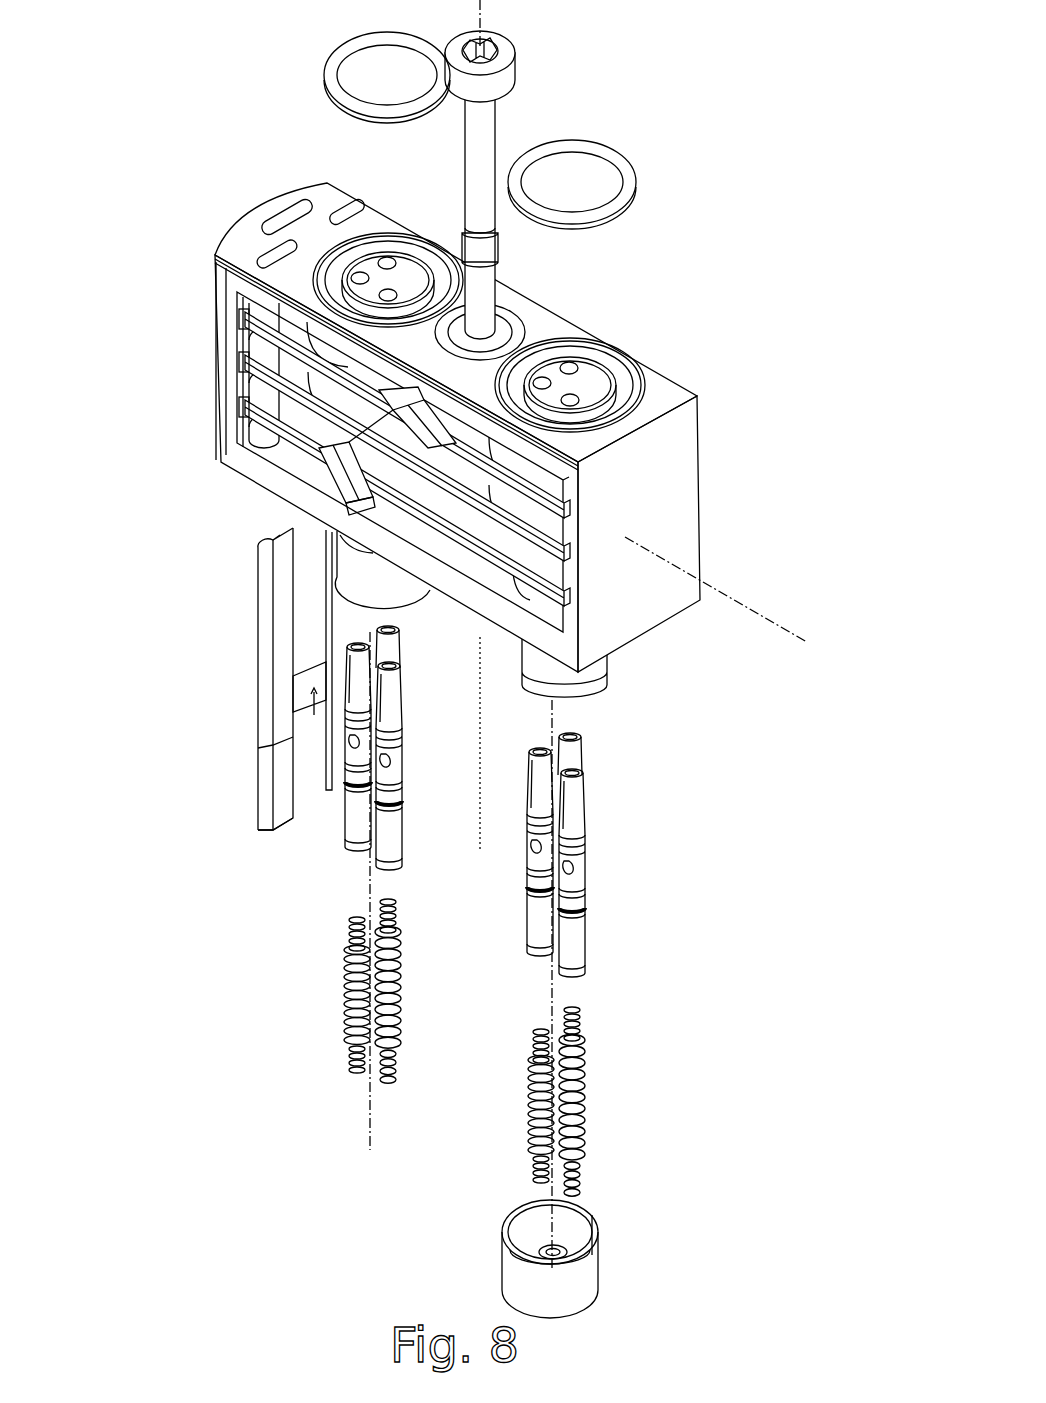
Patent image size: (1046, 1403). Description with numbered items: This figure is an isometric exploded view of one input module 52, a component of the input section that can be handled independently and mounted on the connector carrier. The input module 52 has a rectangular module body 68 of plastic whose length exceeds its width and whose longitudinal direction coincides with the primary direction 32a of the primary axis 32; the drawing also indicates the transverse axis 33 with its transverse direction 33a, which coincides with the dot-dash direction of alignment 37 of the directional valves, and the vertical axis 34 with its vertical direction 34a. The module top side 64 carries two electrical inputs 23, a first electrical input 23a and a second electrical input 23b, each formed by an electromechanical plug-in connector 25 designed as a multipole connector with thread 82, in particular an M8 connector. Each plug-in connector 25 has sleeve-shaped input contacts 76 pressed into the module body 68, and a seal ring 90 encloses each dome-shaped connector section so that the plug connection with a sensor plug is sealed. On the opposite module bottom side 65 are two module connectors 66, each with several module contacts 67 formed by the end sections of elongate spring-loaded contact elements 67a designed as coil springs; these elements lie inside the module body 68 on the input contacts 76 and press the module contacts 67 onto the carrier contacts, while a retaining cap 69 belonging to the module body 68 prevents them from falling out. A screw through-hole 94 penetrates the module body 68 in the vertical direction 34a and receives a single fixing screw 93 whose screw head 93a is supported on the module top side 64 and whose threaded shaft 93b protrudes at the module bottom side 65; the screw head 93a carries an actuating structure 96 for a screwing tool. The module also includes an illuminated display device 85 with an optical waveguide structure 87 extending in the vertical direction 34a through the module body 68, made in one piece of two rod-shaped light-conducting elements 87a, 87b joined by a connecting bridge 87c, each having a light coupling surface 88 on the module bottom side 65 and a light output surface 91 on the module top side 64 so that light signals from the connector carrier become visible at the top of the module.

The input module 52 is at (197, 155).
The module body 68 is at (447, 721).
The module top side 64 is at (329, 196).
The electrical input 23 is at (489, 308).
The first electrical input 23a is at (375, 265).
The second electrical input 23b is at (582, 385).
The plug-in connector 25 is at (515, 282).
The connector with thread 82 is at (334, 262).
The screw through-hole 94 is at (492, 338).
The fixing screw 93 is at (497, 105).
The screw head 93a is at (510, 62).
The threaded shaft 93b is at (497, 282).
The actuating structure 96 is at (462, 42).
The seal ring 90 is at (332, 72).
The vertical axis 34 is at (534, 23).
The vertical direction 34a is at (484, 17).
The primary axis 32 is at (716, 600).
The primary direction 32a is at (740, 603).
The transverse axis 33 is at (348, 457).
The transverse direction 33a is at (348, 457).
The direction of alignment 37 is at (362, 517).
The retaining cap 69 is at (388, 591).
The module bottom side 65 is at (506, 645).
The module connector 66 is at (408, 620).
The input contact 76 is at (356, 644).
The module contact 67 is at (353, 1054).
The spring-loaded contact element 67a is at (382, 952).
The illuminated display device 85 is at (238, 637).
The optical waveguide structure 87 is at (260, 710).
The light-conducting element 87a is at (258, 606).
The light-conducting element 87b is at (333, 764).
The connecting bridge 87c is at (314, 667).
The light coupling surface 88 is at (270, 834).
The light output surface 91 is at (268, 537).